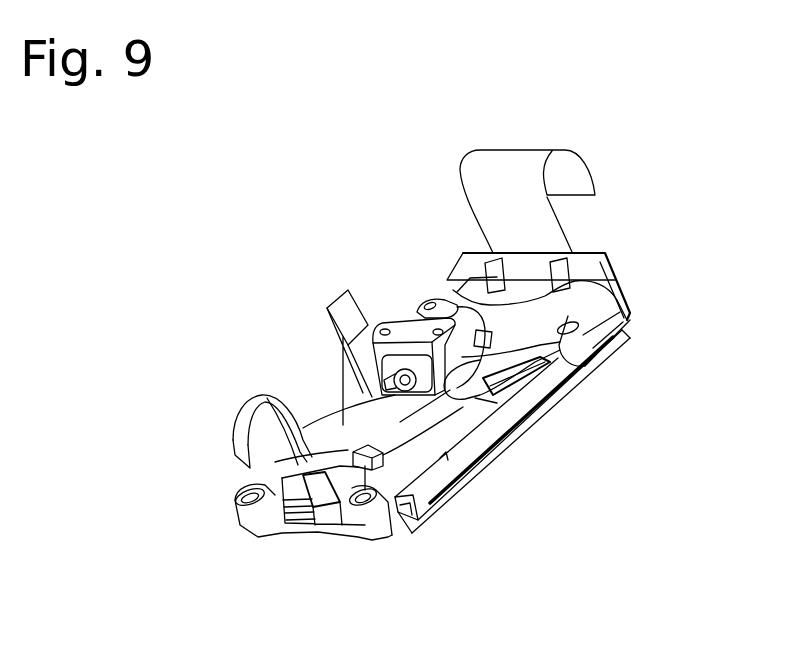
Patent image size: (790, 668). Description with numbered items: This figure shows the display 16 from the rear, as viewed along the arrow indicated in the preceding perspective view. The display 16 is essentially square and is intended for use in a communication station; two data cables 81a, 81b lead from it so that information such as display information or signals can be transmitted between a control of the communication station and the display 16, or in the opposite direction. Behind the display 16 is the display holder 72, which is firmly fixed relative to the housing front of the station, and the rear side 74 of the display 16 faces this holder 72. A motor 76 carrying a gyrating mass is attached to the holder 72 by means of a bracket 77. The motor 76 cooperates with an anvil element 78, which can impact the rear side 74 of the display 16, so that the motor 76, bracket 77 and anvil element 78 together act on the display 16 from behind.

The display 16 is at (495, 543).
The display holder 72 is at (338, 410).
The rear side 74 is at (503, 387).
The motor 76 is at (452, 296).
The bracket 77 is at (407, 333).
The anvil element 78 is at (605, 299).
The data cable 81a is at (233, 433).
The data cable 81b is at (537, 152).